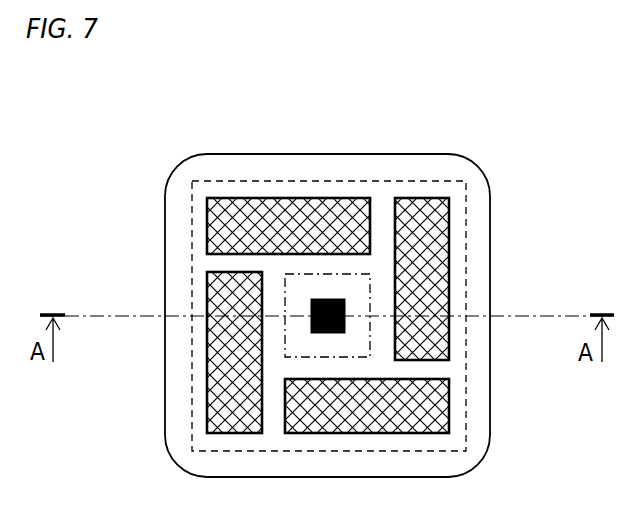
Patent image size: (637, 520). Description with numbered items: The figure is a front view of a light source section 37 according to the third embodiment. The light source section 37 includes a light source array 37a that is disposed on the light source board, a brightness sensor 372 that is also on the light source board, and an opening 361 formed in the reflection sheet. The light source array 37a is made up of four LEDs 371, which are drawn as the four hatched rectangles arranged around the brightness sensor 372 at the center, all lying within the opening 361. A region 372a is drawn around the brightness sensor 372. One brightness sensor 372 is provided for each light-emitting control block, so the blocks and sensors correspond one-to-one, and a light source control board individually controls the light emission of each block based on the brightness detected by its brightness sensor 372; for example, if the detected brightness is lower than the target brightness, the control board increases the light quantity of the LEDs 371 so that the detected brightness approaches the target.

The light source section 37 is at (145, 140).
The light source array 37a is at (192, 222).
The LED 371 is at (438, 228).
The brightness sensor 372 is at (308, 308).
The heating element region 372a is at (286, 342).
The opening 361 is at (491, 410).